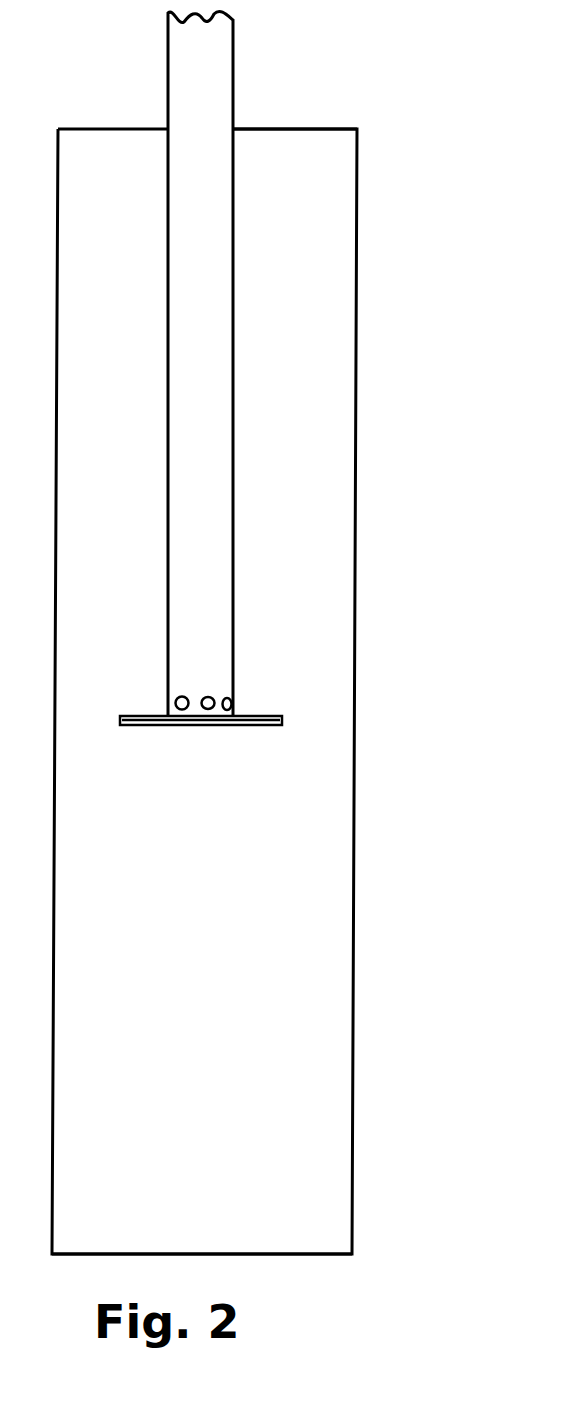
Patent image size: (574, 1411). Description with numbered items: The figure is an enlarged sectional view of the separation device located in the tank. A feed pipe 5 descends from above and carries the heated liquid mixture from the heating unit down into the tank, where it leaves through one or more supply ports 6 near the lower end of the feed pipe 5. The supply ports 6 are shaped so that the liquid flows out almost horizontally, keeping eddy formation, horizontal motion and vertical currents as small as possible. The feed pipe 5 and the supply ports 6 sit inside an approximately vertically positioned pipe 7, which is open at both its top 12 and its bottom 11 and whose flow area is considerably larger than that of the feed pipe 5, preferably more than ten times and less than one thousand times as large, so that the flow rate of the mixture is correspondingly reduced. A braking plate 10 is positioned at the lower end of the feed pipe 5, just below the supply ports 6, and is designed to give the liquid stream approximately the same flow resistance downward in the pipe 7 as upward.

The feed pipe 5 is at (225, 332).
The supply ports 6 is at (234, 690).
The vertically positioned pipe 7 is at (354, 982).
The braking plate 10 is at (268, 726).
The bottom edge 11 is at (316, 1256).
The top edge 12 is at (327, 130).